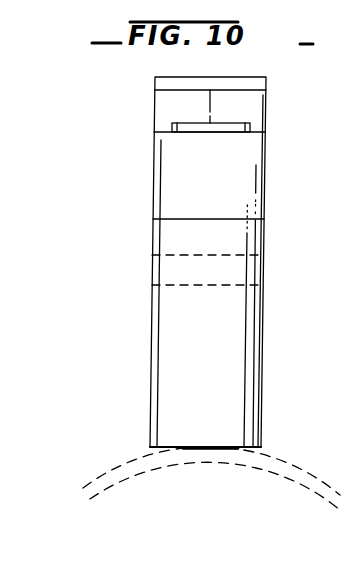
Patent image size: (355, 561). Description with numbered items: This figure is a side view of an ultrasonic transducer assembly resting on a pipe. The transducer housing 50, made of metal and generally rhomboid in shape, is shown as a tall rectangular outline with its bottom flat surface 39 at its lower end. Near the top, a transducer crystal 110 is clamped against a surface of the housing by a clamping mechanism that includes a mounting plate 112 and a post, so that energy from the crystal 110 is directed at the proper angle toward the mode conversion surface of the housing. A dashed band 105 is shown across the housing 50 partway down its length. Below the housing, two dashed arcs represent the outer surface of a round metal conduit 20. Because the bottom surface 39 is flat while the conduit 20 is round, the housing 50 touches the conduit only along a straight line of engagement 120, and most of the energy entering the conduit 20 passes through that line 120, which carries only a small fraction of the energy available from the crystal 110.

The mounting plate 112 is at (172, 77).
The transducer crystal 110 is at (180, 124).
The seal band 105 is at (164, 256).
The transducer housing 50 is at (218, 356).
The line of engagement 120 is at (226, 425).
The conduit 20 is at (120, 465).
The bottom flat surface 39 is at (262, 452).